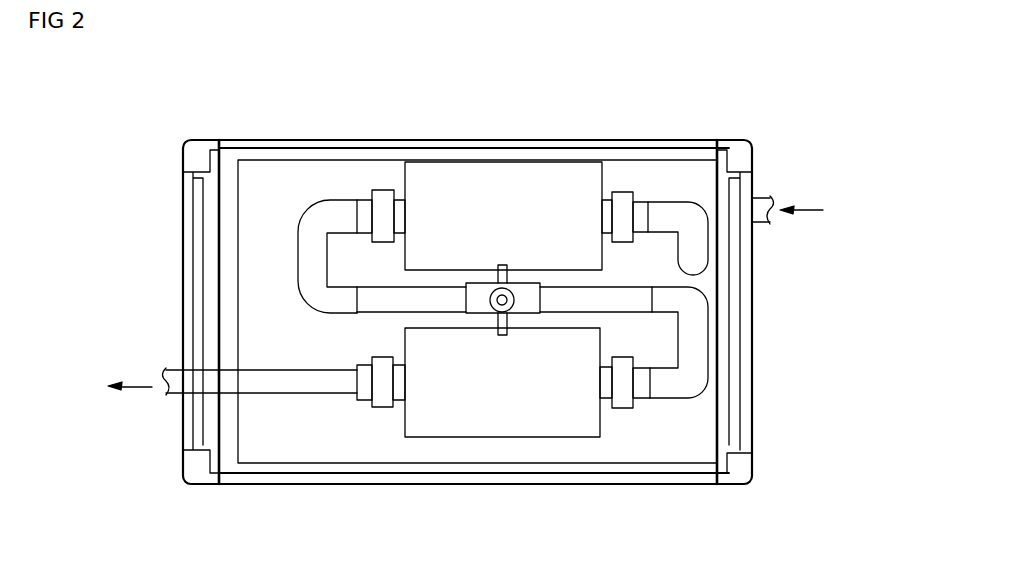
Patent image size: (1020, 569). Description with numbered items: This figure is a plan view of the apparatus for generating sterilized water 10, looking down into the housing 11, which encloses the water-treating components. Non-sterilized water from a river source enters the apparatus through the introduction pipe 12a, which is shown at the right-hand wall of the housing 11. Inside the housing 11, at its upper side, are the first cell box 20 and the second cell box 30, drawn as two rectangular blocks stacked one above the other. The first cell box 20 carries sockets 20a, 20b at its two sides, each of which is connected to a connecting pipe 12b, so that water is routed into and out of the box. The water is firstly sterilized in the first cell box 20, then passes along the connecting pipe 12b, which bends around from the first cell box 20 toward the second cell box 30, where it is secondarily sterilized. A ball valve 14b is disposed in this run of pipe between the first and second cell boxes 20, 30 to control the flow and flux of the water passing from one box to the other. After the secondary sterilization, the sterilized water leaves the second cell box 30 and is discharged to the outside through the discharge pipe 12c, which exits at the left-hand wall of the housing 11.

The apparatus for generating sterilized water 10 is at (773, 146).
The housing 11 is at (747, 435).
The introduction pipe 12a is at (756, 225).
The connecting pipe 12b is at (678, 210).
The discharge pipe 12c is at (180, 368).
The ball valve 14b is at (475, 295).
The first cell box 20 is at (512, 173).
The socket 20a is at (622, 192).
The socket 20b is at (383, 192).
The second cell box 30 is at (483, 425).